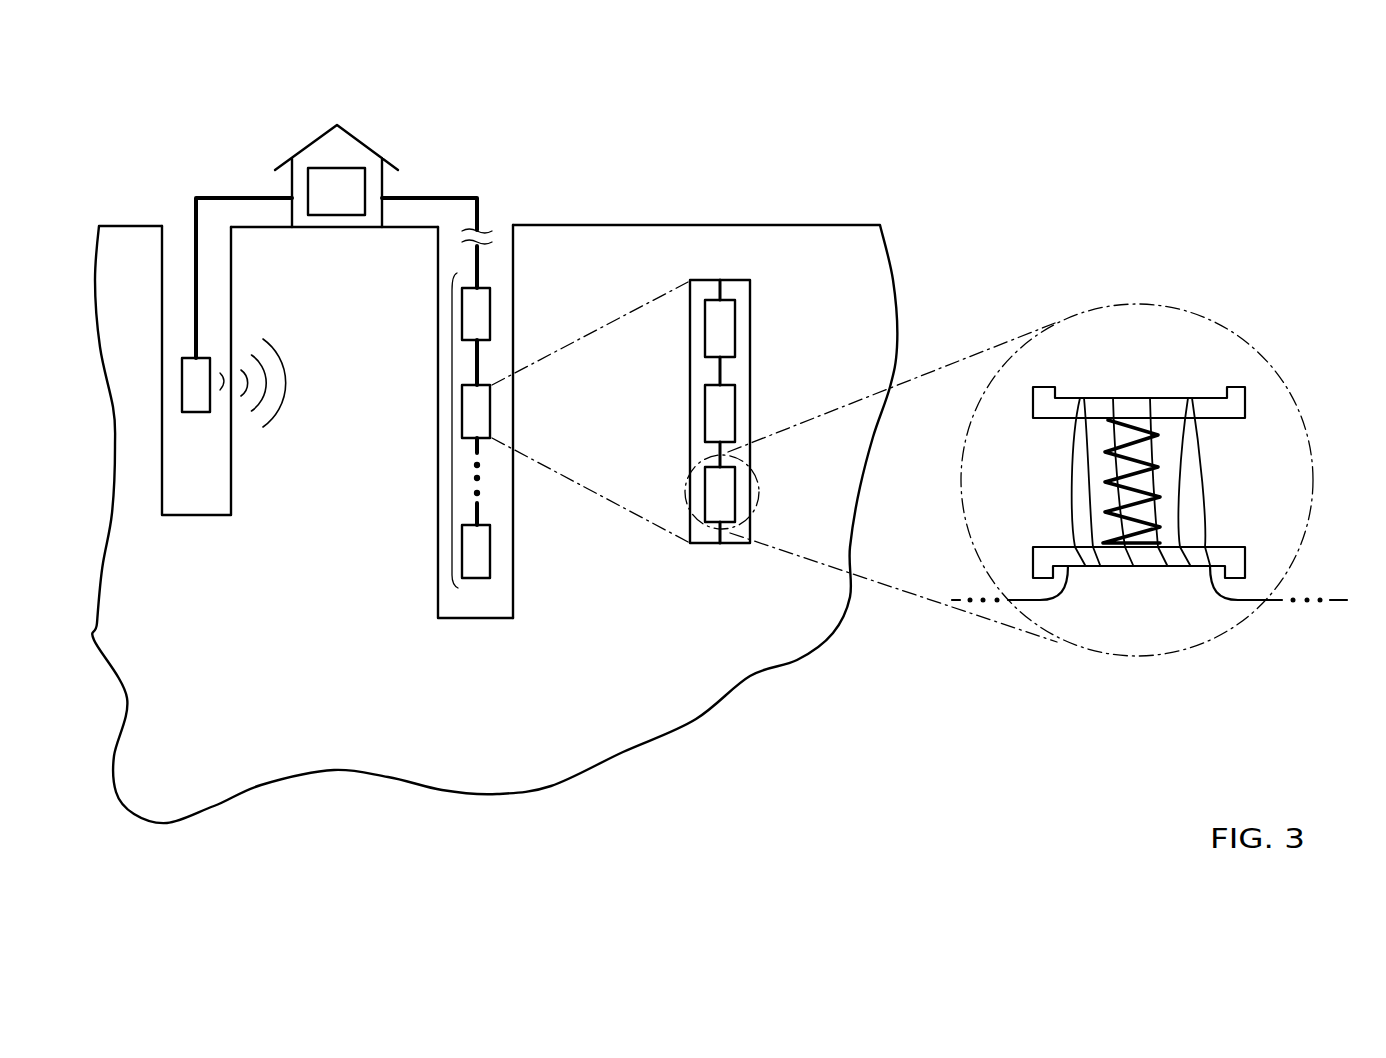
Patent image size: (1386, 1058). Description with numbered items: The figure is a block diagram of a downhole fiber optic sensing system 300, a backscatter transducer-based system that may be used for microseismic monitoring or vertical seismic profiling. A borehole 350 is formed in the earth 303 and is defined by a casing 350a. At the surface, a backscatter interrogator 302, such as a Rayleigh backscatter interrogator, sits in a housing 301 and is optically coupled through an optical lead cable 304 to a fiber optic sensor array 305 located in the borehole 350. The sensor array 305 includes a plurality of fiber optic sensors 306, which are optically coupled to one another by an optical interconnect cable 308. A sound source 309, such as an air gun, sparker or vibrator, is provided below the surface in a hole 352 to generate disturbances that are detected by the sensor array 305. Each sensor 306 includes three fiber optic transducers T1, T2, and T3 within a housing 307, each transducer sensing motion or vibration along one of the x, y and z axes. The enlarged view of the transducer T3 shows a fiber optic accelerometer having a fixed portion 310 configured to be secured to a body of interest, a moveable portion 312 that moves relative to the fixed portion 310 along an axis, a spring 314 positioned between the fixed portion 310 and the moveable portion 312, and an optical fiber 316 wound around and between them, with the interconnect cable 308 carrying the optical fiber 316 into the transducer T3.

The downhole fiber optic sensing system 300 is at (1033, 160).
The housing 301 is at (360, 142).
The backscatter interrogator 302 is at (357, 203).
The earth 303 is at (205, 756).
The optical lead cable 304 is at (440, 198).
The fiber optic sensor array 305 is at (448, 433).
The fiber optic sensor 306 is at (490, 310).
The housing 307 is at (752, 530).
The optical interconnect cable 308 is at (480, 363).
The sound source 309 is at (205, 413).
The fixed portion 310 is at (1232, 545).
The moveable portion 312 is at (1245, 400).
The spring 314 is at (1163, 437).
The optical fiber 316 is at (1084, 405).
The borehole 350 is at (505, 235).
The casing 350a is at (515, 258).
The hole 352 is at (177, 238).
The fiber optic transducer T1 is at (728, 340).
The fiber optic transducer T2 is at (728, 410).
The fiber optic transducer T3 is at (713, 490).